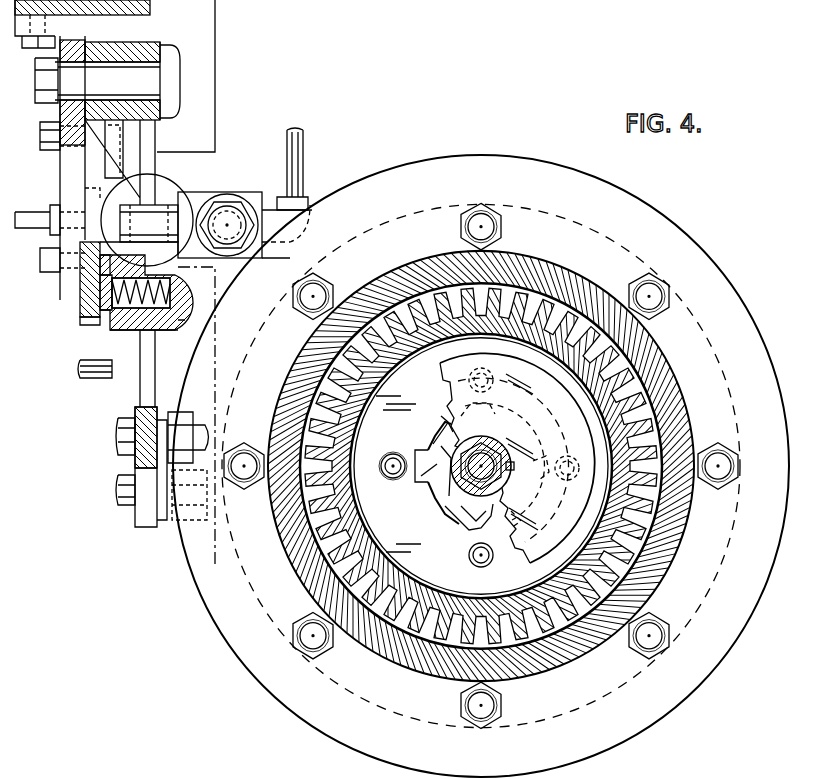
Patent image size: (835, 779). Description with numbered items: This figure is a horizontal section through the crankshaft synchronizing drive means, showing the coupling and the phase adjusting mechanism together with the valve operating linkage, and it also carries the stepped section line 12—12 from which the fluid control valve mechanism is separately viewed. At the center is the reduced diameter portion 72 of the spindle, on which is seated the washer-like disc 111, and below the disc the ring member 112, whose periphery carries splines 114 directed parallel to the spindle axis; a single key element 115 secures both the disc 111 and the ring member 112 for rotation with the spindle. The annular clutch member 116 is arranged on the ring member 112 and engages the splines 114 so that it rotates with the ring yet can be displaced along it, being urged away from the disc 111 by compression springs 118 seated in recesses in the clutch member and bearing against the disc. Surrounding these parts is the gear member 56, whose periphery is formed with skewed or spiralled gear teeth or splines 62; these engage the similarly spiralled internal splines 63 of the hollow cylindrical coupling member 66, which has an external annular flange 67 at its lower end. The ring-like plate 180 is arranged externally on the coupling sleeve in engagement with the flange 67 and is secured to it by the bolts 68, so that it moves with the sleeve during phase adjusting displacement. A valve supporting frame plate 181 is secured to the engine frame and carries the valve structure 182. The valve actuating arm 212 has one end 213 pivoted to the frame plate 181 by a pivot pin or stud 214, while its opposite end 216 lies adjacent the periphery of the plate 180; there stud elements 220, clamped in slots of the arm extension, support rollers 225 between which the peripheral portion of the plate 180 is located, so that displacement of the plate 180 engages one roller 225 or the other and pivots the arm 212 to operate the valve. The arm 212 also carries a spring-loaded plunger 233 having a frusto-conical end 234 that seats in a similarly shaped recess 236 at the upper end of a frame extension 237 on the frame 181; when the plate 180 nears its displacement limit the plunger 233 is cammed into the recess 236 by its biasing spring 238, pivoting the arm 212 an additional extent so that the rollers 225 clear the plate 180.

The section line 12- 12 is at (226, 9).
The gear member 56 is at (388, 572).
The gear teeth or splines 62 is at (410, 592).
The splines 63 is at (646, 512).
The coupling member 66 is at (668, 546).
The annular flange 67 is at (600, 702).
The bolts 68 is at (497, 226).
The reduced diameter portion of spindle 72 is at (470, 490).
The disc 111 is at (448, 393).
The ring member 112 is at (438, 488).
The splines 114 is at (450, 516).
The key element 115 is at (514, 469).
The annular clutch member 116 is at (404, 500).
The compression springs 118 is at (391, 472).
The ring-like plate 180 is at (660, 216).
The valve supporting frame plate 181 is at (70, 170).
The valve structure 182 is at (178, 190).
The valve actuating arm 212 is at (150, 172).
The pivoted end of arm 213 is at (158, 44).
The pivot pin or stud 214 is at (98, 82).
The arm end 216 is at (140, 410).
The stud element 220 is at (118, 450).
The roller 225 is at (195, 414).
The spring-loaded plunger 233 is at (120, 332).
The frusto-conical end 234 is at (92, 312).
The recess 236 is at (92, 325).
The frame extension 237 is at (80, 300).
The biasing spring 238 is at (176, 296).